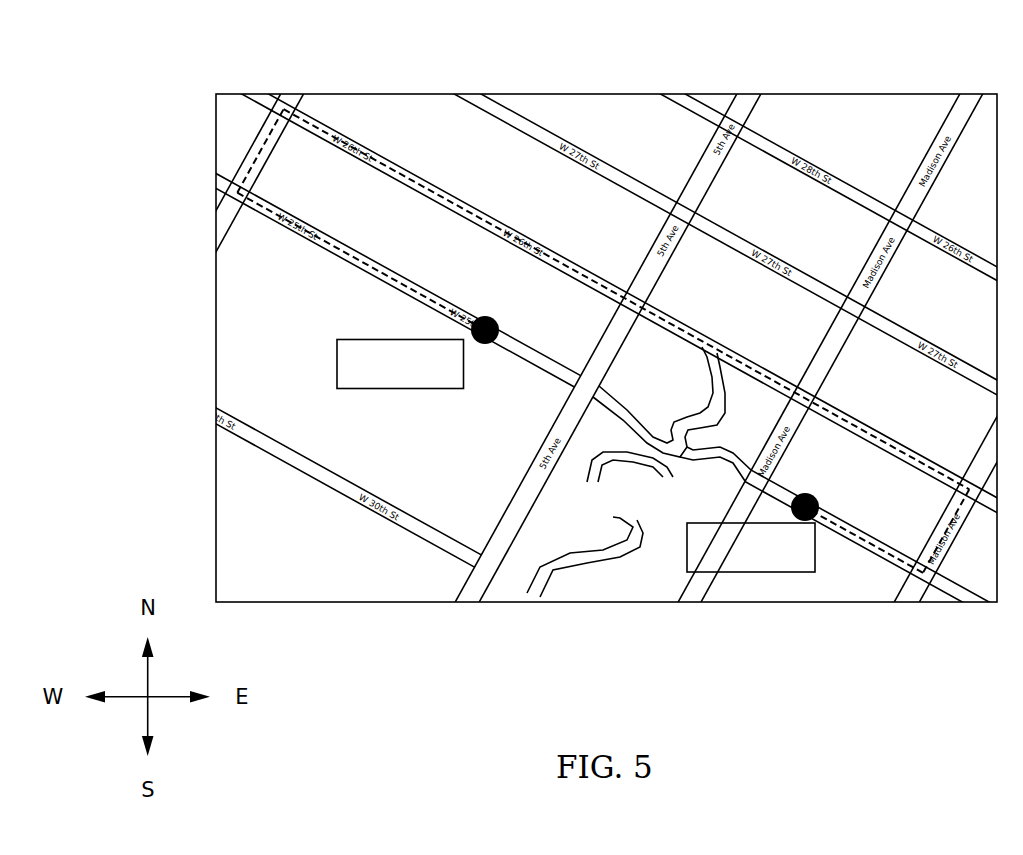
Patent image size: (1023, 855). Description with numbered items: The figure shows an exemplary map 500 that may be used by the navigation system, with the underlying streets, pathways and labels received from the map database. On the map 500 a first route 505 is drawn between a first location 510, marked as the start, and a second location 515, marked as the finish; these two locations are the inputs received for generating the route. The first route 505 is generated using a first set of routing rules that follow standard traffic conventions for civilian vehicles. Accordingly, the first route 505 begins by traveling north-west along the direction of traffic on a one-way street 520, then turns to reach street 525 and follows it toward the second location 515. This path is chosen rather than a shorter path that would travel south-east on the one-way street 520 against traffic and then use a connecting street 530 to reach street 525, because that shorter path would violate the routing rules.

The map 500 is at (167, 106).
The first route 505 is at (260, 148).
The first location 510 is at (498, 319).
The second location 515 is at (816, 497).
The one-way street 520 is at (305, 224).
The street 525 is at (349, 142).
The connecting street 530 is at (613, 345).